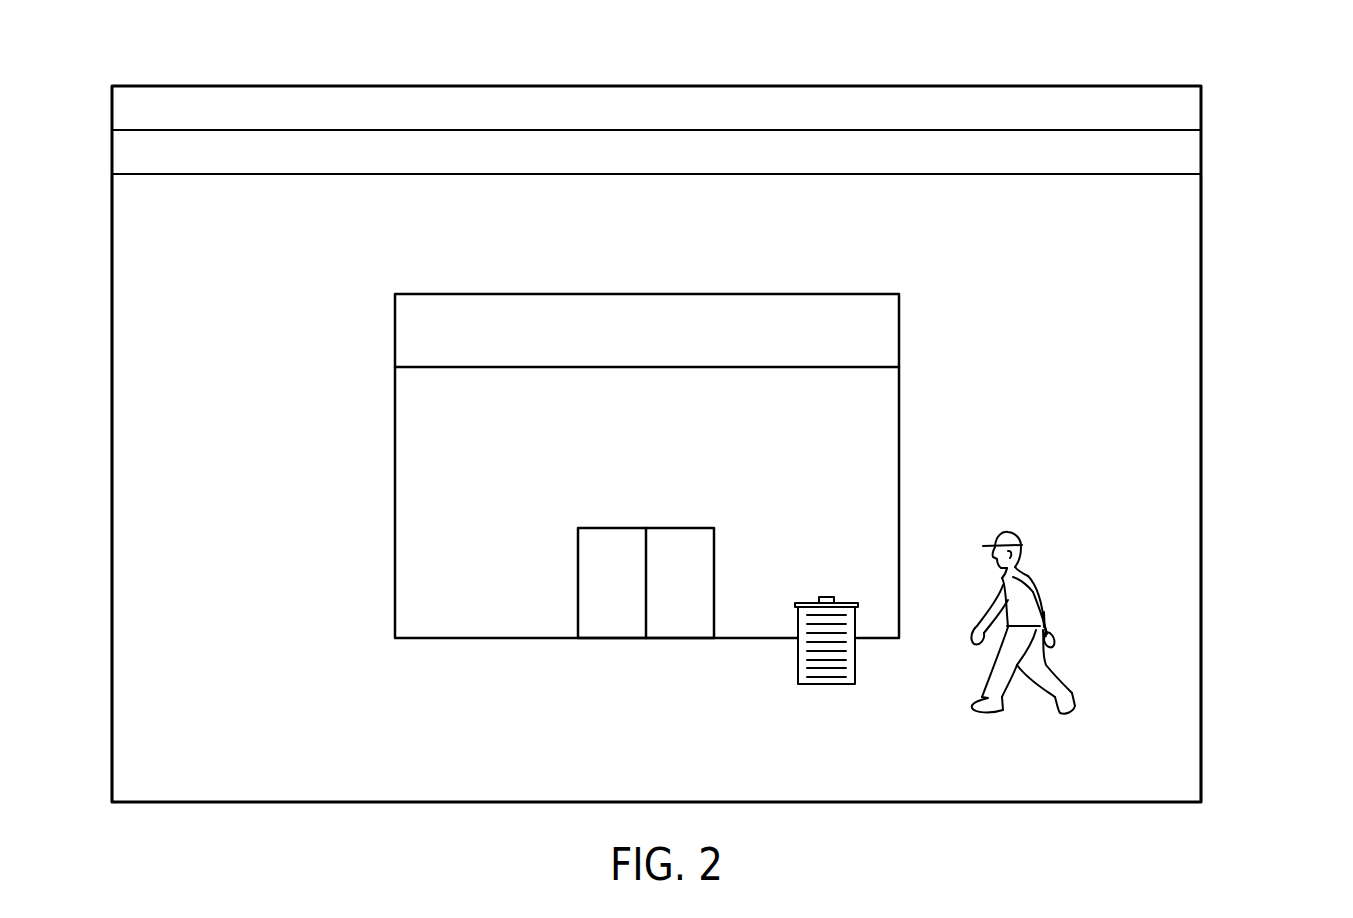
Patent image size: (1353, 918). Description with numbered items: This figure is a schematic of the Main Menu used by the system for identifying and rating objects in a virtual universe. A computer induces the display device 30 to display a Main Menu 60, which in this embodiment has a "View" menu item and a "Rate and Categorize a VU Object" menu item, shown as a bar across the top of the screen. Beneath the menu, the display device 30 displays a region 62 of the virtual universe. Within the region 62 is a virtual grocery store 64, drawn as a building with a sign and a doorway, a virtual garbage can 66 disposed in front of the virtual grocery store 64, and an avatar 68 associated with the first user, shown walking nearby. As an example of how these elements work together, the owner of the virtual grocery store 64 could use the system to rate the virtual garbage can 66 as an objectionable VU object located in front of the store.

The display device 30 is at (1248, 104).
The Main Menu 60 is at (949, 85).
The region 62 is at (1167, 323).
The virtual grocery store 64 is at (900, 397).
The virtual garbage can 66 is at (858, 672).
The avatar 68 is at (1035, 583).